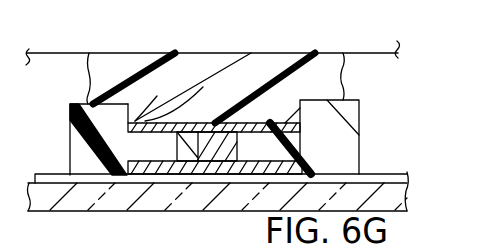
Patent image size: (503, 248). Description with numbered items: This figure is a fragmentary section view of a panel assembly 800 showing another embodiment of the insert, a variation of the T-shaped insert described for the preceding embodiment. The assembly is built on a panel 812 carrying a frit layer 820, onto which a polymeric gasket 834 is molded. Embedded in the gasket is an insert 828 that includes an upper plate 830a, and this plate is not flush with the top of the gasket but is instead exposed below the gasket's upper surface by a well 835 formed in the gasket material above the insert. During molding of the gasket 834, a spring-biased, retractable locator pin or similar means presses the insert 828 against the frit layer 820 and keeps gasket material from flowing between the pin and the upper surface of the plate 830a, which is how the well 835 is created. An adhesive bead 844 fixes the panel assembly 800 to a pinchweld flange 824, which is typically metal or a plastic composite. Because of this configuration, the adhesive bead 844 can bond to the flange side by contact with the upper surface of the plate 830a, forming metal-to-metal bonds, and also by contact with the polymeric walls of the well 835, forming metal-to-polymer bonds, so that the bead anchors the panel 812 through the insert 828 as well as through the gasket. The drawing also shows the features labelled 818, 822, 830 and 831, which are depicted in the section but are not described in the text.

The panel assembly 800 is at (385, 67).
The panel 812 is at (133, 206).
The substrate edge / lower surface 818 is at (33, 190).
The frit layer 820 is at (70, 176).
The right spacer block 822 is at (378, 97).
The pinchweld flange 824 is at (72, 53).
The insert 828 is at (284, 159).
The solder bump 830 is at (185, 161).
The upper plate 830a is at (197, 99).
The dielectric layer 831 is at (240, 121).
The gasket 834 is at (92, 113).
The well 835 is at (161, 97).
The adhesive bead 844 is at (195, 62).